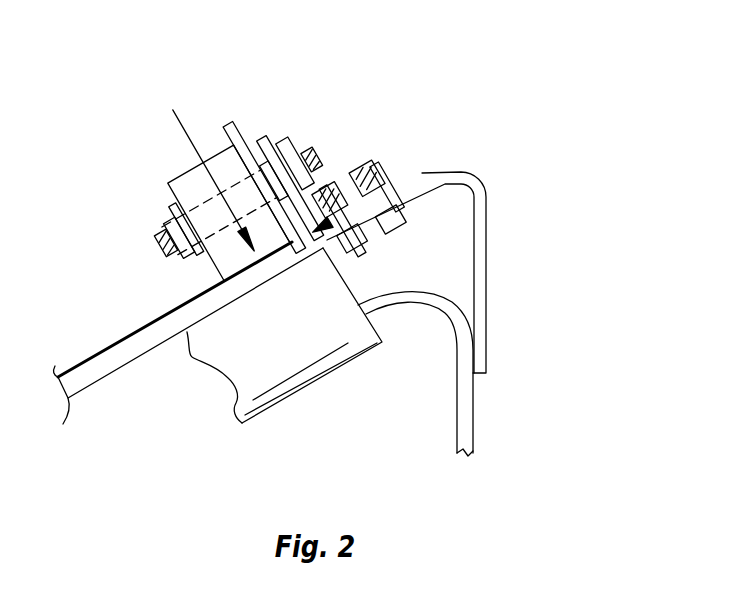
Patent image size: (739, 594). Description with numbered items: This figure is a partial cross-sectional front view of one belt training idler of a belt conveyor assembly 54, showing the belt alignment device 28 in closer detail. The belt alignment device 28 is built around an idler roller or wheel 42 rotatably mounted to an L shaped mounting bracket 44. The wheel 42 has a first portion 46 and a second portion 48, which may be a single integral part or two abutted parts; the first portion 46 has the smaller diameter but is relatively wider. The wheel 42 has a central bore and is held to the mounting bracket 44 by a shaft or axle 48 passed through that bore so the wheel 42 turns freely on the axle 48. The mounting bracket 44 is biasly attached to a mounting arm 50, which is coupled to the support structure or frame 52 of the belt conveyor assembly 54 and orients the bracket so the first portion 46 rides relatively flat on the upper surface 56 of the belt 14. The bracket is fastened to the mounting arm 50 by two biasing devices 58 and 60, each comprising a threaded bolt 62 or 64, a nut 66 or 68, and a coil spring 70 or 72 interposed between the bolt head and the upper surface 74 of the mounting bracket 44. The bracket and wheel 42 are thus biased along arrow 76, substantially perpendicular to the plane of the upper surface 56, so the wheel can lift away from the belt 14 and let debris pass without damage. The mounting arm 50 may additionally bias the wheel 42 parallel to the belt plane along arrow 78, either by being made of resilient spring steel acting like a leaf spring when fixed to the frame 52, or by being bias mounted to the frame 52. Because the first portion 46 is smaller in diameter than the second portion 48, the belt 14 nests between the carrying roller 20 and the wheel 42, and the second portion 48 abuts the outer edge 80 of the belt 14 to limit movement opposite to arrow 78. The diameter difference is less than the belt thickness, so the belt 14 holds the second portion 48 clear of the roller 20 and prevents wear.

The belt 14 is at (127, 366).
The carrying roller 20 is at (292, 394).
The belt alignment device 28 is at (375, 78).
The idler roller or wheel 42 is at (165, 204).
The L shaped mounting bracket 44 is at (262, 132).
The first portion 46 is at (183, 172).
The second portion / shaft or axle 48 is at (228, 127).
The mounting arm 50 is at (487, 255).
The support structure or frame 52 is at (474, 417).
The belt conveyor assembly 54 is at (527, 378).
The upper surface of the belt 56 is at (132, 334).
The biasing device 58 is at (452, 158).
The biasing device 60 is at (406, 230).
The threaded bolt 62 is at (334, 170).
The threaded bolt 64 is at (364, 164).
The nut 66 is at (340, 262).
The nut 68 is at (405, 208).
The coil spring 70 is at (316, 249).
The coil spring 72 is at (396, 176).
The upper surface of the mounting bracket 74 is at (443, 160).
The arrow 76 is at (182, 128).
The arrow 78 is at (465, 172).
The outer edge of the belt 80 is at (283, 262).